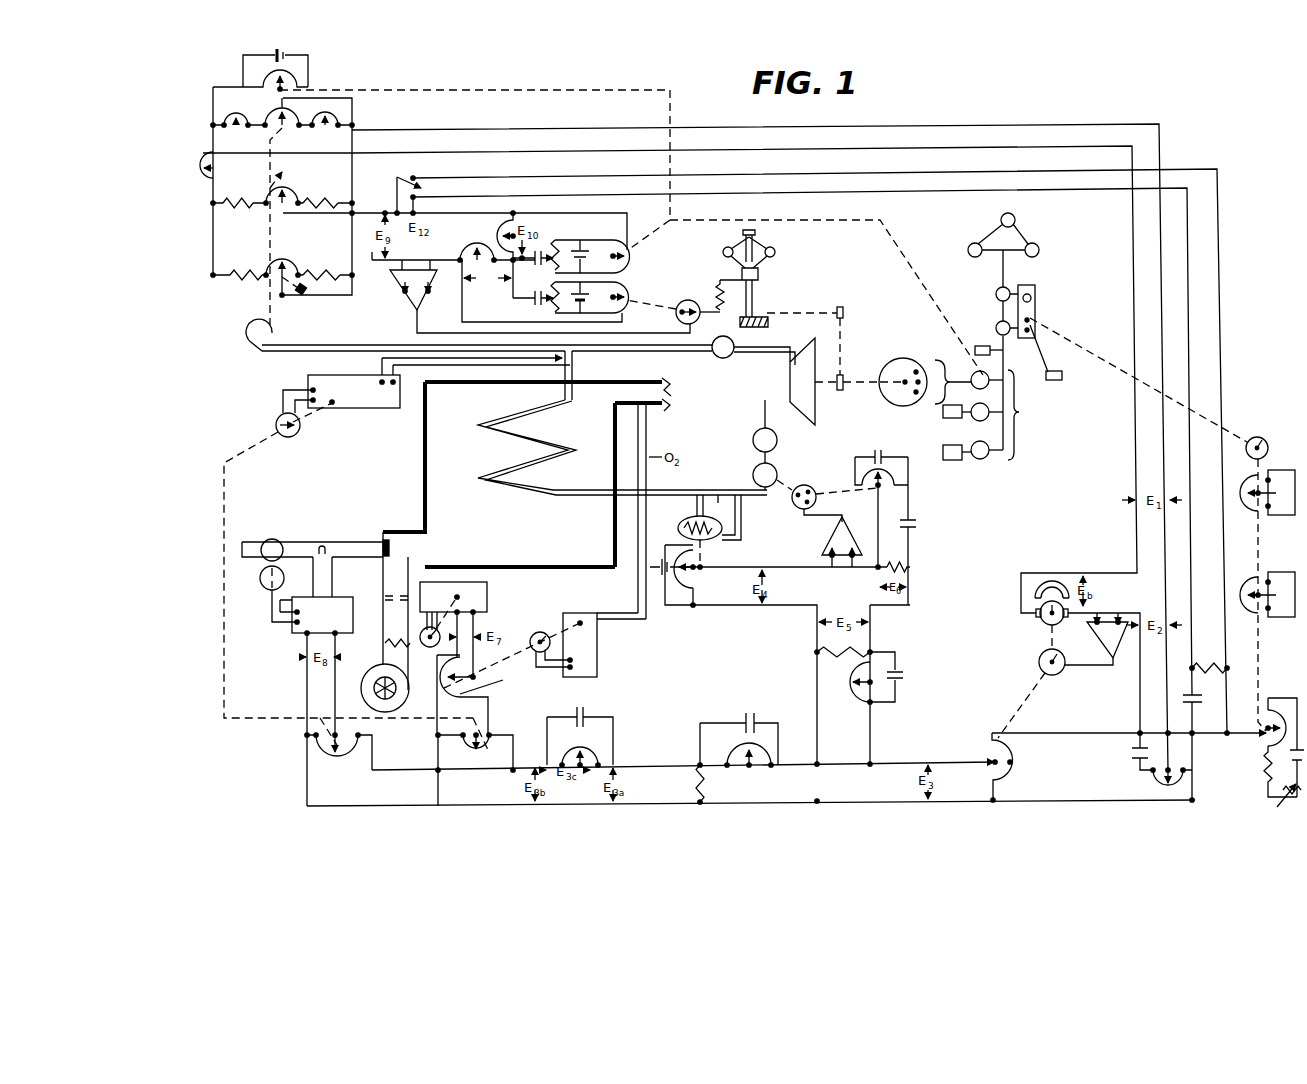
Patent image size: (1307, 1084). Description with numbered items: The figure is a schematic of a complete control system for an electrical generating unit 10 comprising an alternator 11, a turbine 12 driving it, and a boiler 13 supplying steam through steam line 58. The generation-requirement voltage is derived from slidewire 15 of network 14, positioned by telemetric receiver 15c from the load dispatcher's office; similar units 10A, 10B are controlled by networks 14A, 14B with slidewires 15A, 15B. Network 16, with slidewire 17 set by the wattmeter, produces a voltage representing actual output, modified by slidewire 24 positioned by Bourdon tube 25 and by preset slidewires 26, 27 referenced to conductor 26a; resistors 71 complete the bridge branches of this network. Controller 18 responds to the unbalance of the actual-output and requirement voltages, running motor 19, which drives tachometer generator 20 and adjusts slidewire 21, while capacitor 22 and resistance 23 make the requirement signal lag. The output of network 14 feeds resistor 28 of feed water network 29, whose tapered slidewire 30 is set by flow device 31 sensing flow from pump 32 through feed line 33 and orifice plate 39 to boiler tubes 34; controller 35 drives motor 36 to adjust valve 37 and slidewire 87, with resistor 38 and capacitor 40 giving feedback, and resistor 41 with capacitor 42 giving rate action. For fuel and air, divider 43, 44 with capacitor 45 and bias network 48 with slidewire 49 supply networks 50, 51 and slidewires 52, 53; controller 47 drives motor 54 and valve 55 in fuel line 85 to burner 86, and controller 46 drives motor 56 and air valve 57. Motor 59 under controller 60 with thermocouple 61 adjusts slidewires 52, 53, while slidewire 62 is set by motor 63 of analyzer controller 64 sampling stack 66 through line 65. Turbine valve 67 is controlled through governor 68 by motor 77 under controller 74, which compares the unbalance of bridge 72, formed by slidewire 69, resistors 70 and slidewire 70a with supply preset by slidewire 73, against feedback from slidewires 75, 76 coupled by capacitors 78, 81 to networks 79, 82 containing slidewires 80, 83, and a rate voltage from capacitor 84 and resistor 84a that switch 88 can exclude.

The electrical generating unit 10 is at (1060, 336).
The generating unit 10A is at (940, 411).
The generating unit 10B is at (945, 459).
The electrical generator or alternator 11 is at (890, 400).
The turbine 12 is at (815, 402).
The vapor generator or boiler 13 is at (423, 470).
The electrical network 14 is at (1129, 748).
The network 14A is at (1250, 481).
The network 14B is at (1283, 580).
The potentiometer slidewire 15 is at (1264, 741).
The slidewire 15A is at (1270, 516).
The slidewire 15B is at (1270, 619).
The telemetric receiver 15c is at (1266, 441).
The network 16 is at (419, 204).
The slidewire 17 is at (297, 80).
The controller 18 is at (1128, 617).
The reversible motor 19 is at (1040, 668).
The D. C. generator 20 is at (1041, 619).
The slidewire 21 is at (1006, 778).
The capacitor 22 is at (1135, 760).
The resistance 23 is at (1186, 775).
The slidewire 24 is at (305, 107).
The Bourdon tube 25 is at (245, 343).
The slidewire 26 is at (243, 110).
The conductor 26a is at (213, 140).
The slidewire 27 is at (340, 118).
The resistor 28 is at (824, 656).
The control network 29 is at (862, 669).
The slidewire 30 is at (683, 595).
The flow-responsive device 31 is at (716, 541).
The pump 32 is at (778, 440).
The feed line 33 is at (656, 496).
The tubes 34 is at (497, 466).
The controller 35 is at (820, 541).
The reversible motor 36 is at (815, 490).
The feed water valve 37 is at (778, 472).
The resistor 38 is at (909, 571).
The orifice plate 39 is at (733, 472).
The capacitor 40 is at (920, 520).
The resistor 41 is at (857, 697).
The capacitor 42 is at (905, 679).
The potential-divider resistor 43 is at (697, 786).
The potential-divider slidewire 44 is at (753, 770).
The capacitor 45 is at (746, 718).
The air controller 46 is at (488, 595).
The fuel controller 47 is at (297, 634).
The bias network 48 is at (610, 719).
The slidewire 49 is at (563, 749).
The control network 50 is at (462, 695).
The control network 51 is at (321, 684).
The slidewire 52 is at (472, 747).
The slidewire 53 is at (339, 757).
The reversible motor 54 is at (261, 585).
The valve 55 is at (278, 539).
The reversible motor 56 is at (430, 648).
The air valve 57 is at (403, 633).
The steam line 58 is at (630, 351).
The reversible motor 59 is at (276, 424).
The controller 60 is at (368, 409).
The thermocouple 61 is at (562, 373).
The slidewire 62 is at (494, 680).
The reversible motor 63 is at (538, 631).
The controller 64 is at (598, 648).
The sampling line 65 is at (641, 612).
The boiler stack 66 is at (660, 408).
The turbine valve 67 is at (723, 358).
The speed governor 68 is at (779, 278).
The slidewire 69 is at (296, 195).
The resistors 70 is at (321, 273).
The slidewire 70a is at (298, 262).
The resistor 71 is at (244, 200).
The subsidiary bridge 72 is at (282, 264).
The slidewire 73 is at (201, 176).
The controller 74 is at (404, 293).
The slidewire 75 is at (498, 232).
The slidewire 76 is at (463, 255).
The reversible motor 77 is at (691, 300).
The capacitor 78 is at (538, 251).
The network 79 is at (585, 249).
The slidewire 80 is at (622, 257).
The capacitor 81 is at (531, 299).
The network 82 is at (592, 300).
The slidewire 83 is at (621, 298).
The capacitor 84 is at (1183, 698).
The resistor 84a is at (1218, 664).
The fuel supply line 85 is at (361, 543).
The burner 86 is at (410, 532).
The slidewire 87 is at (881, 509).
The switch 88 is at (415, 184).